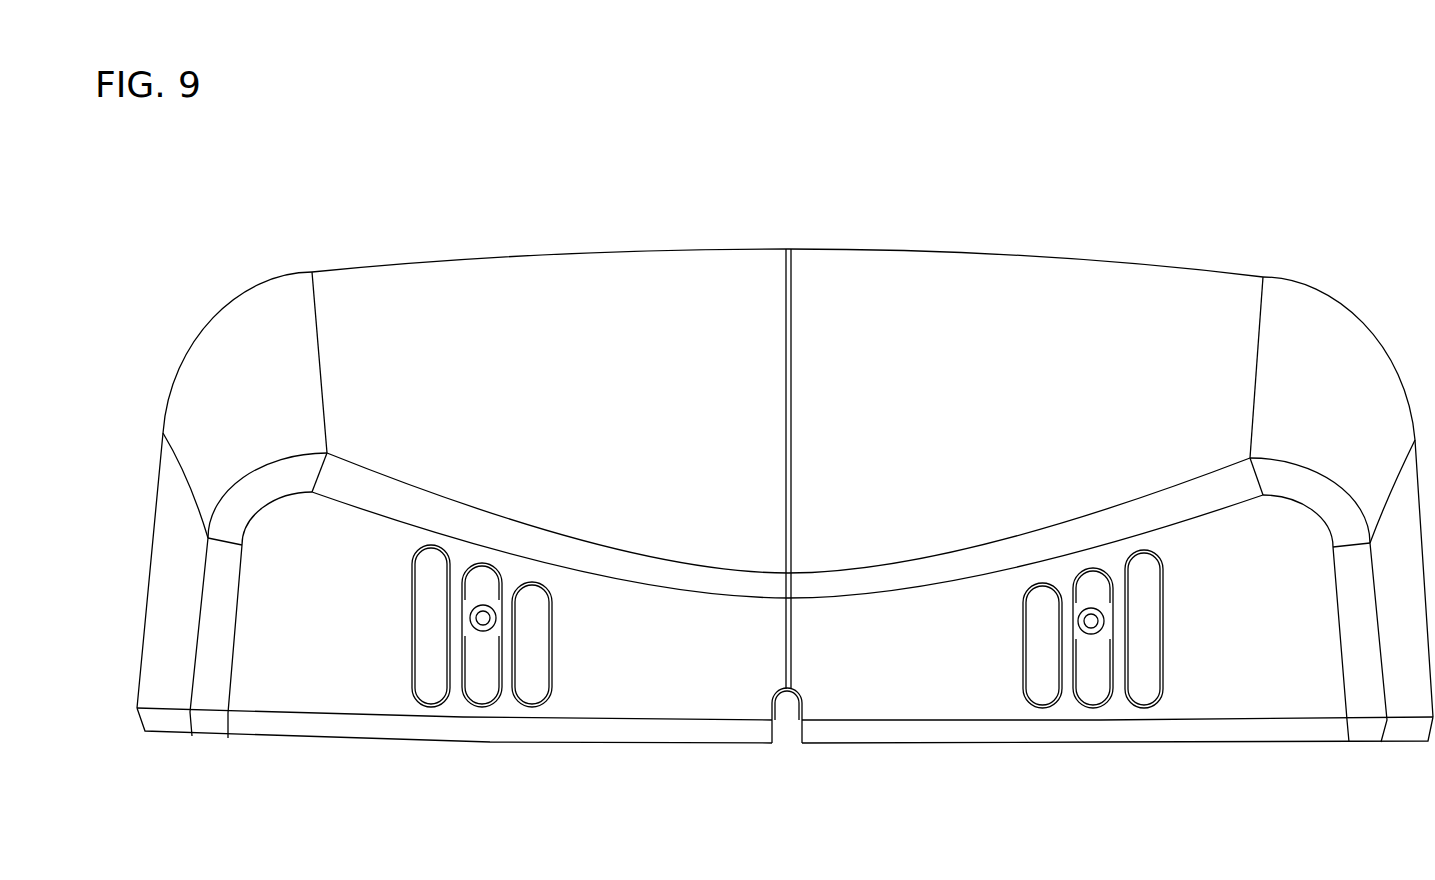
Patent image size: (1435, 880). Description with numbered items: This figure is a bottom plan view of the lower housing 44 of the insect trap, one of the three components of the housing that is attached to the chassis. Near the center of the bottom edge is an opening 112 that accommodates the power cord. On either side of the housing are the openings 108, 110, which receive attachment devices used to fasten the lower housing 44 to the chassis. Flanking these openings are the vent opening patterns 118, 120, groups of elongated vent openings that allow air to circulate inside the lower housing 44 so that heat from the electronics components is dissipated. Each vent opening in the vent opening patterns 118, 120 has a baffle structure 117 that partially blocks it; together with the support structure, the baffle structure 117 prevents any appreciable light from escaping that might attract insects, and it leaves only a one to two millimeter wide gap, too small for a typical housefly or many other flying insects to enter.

The lower housing 44 is at (1267, 243).
The opening 108 is at (497, 613).
The opening 110 is at (1102, 612).
The opening 112 is at (800, 723).
The baffle structure 117 is at (532, 668).
The vent opening pattern 118 is at (1093, 710).
The vent opening pattern 120 is at (483, 707).